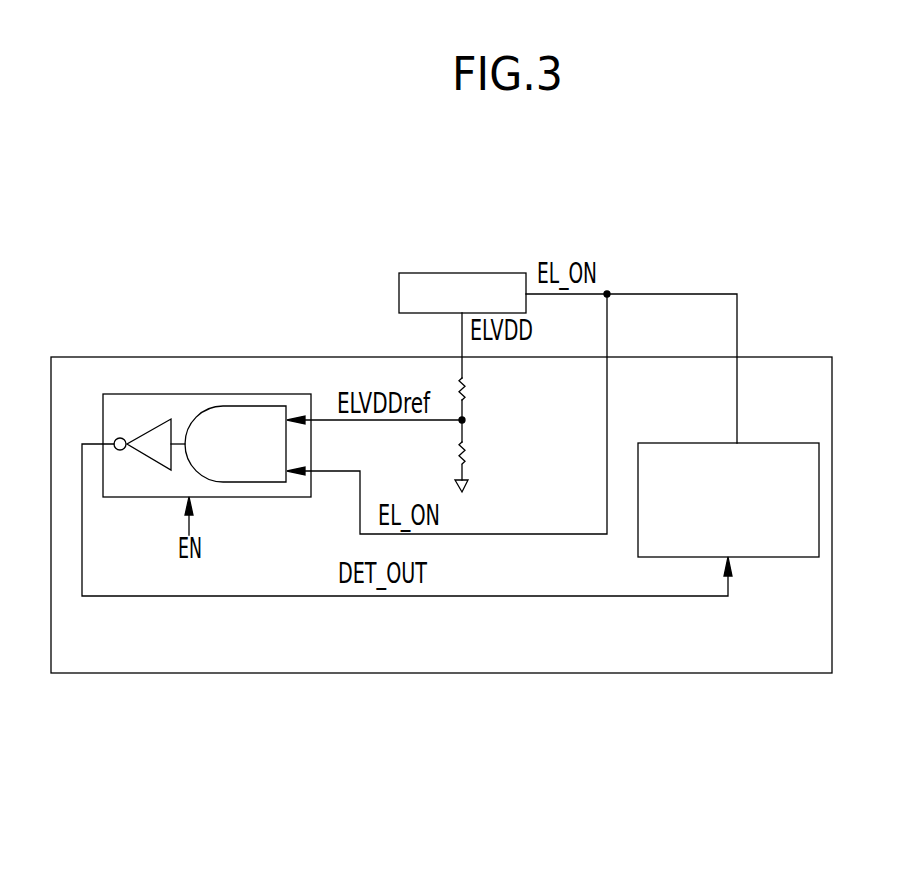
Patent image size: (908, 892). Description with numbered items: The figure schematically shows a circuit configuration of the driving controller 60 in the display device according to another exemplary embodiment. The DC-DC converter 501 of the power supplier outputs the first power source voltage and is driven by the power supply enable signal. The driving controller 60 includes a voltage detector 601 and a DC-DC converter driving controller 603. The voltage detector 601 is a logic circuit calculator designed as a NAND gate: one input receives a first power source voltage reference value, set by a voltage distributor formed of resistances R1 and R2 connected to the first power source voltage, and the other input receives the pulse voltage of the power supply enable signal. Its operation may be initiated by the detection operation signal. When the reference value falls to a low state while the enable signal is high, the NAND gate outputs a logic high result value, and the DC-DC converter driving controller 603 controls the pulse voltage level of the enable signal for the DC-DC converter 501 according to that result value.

The driving controller 60 is at (832, 387).
The DC-DC converter 501 is at (462, 293).
The voltage detector 601 is at (207, 394).
The DC-DC converter driving controller 603 is at (819, 501).
The resistance R1 is at (475, 390).
The resistance R2 is at (475, 455).